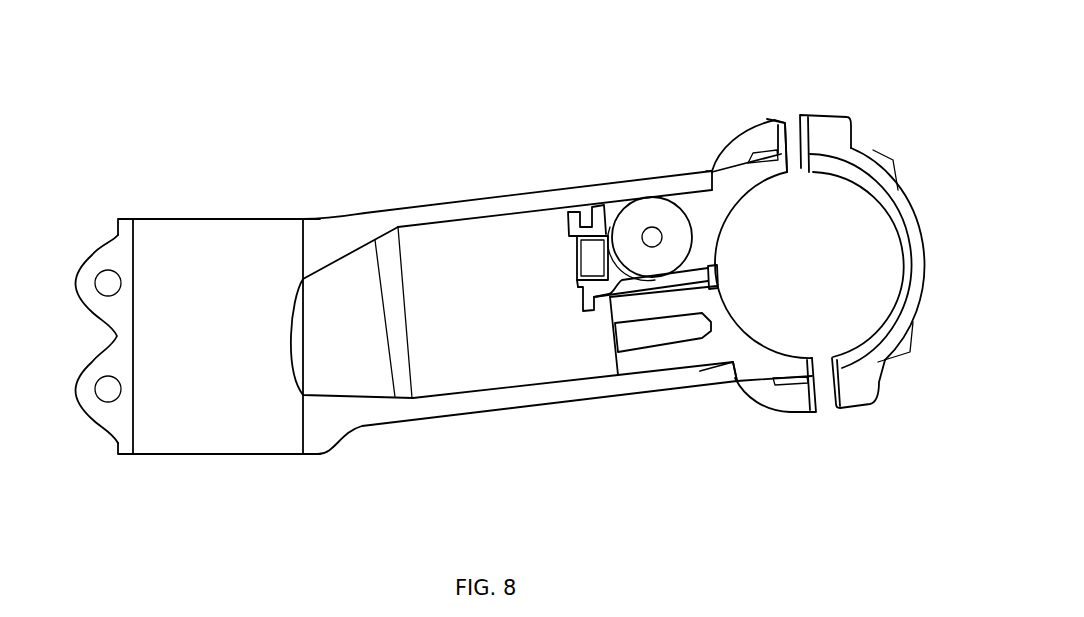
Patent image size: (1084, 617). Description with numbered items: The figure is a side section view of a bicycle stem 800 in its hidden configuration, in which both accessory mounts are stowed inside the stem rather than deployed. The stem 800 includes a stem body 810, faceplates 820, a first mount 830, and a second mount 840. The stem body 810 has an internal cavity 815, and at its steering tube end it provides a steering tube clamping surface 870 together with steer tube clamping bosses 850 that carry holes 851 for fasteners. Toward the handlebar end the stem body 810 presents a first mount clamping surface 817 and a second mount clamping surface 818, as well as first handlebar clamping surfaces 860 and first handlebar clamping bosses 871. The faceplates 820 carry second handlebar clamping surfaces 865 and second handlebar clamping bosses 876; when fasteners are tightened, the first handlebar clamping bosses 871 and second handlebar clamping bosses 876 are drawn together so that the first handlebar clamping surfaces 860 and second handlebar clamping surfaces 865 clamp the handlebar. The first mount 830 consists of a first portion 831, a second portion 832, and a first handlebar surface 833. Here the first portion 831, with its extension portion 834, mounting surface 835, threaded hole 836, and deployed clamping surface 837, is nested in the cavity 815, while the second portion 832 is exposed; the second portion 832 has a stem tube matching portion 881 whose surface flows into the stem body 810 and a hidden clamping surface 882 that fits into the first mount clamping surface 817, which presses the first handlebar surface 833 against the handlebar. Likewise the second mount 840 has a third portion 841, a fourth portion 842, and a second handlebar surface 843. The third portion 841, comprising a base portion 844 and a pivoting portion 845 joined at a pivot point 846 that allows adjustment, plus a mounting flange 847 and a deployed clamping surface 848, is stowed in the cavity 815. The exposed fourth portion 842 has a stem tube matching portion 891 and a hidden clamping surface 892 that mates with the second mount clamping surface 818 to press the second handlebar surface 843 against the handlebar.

The stem 800 is at (191, 46).
The stem body 810 is at (465, 205).
The cavity 815 is at (502, 285).
The first mount clamping surface 817 is at (692, 357).
The second mount clamping surface 818 is at (708, 172).
The faceplates 820 is at (907, 227).
The first mount 830 is at (673, 357).
The first portion 831 is at (637, 367).
The second portion 832 is at (770, 365).
The first handlebar surface 833 is at (755, 337).
The extension portion 834 is at (727, 355).
The mounting surface 835 is at (610, 300).
The threaded hole 836 is at (627, 340).
The deployed clamping surface 837 is at (732, 363).
The second mount 840 is at (700, 187).
The third portion 841 is at (655, 215).
The fourth portion 842 is at (743, 178).
The second handlebar surface 843 is at (737, 207).
The base portion 844 is at (698, 233).
The pivoting portion 845 is at (592, 268).
The pivot point 846 is at (603, 200).
The mounting flange 847 is at (578, 287).
The deployed clamping surface 848 is at (700, 200).
The steer tube clamping bosses 850 is at (100, 262).
The holes 851 is at (115, 385).
The first handlebar clamping surfaces 860 is at (717, 275).
The second handlebar clamping surfaces 865 is at (902, 248).
The steering tube clamping surface 870 is at (225, 260).
The first handlebar clamping bosses 871 is at (762, 133).
The second handlebar clamping bosses 876 is at (833, 133).
The stem tube matching portion 881 is at (782, 370).
The hidden clamping surface 882 is at (740, 382).
The stem tube matching portion 891 is at (760, 152).
The hidden clamping surface 892 is at (704, 166).